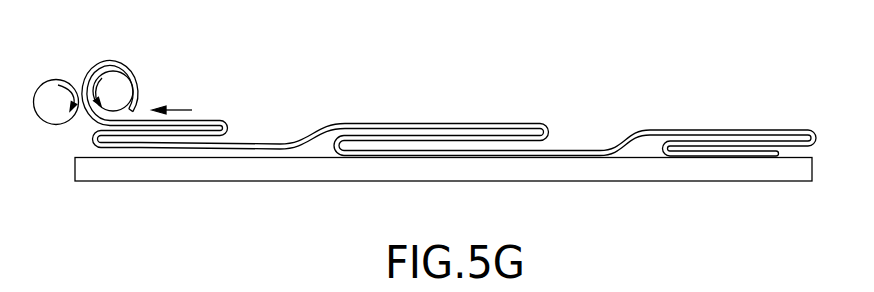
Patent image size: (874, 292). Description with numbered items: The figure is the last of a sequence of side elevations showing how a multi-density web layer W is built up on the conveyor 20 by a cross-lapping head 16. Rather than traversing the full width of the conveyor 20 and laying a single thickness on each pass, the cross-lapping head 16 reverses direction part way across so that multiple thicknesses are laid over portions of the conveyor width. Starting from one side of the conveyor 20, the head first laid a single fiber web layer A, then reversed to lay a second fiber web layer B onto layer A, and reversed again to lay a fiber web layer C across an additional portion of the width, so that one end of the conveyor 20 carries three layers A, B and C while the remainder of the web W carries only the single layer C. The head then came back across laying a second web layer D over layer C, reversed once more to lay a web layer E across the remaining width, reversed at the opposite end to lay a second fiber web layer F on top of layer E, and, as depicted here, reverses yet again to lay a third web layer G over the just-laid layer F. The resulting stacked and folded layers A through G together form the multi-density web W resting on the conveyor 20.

The cross-lapping head 16 is at (112, 86).
The multi-density web layer W is at (137, 72).
The fiber web layer A is at (773, 152).
The fiber web layer B is at (795, 140).
The fiber web layer C is at (638, 132).
The web layer D is at (509, 133).
The web layer E is at (456, 122).
The fiber web layer F is at (197, 132).
The web layer G is at (133, 116).
The conveyor 20 is at (413, 168).